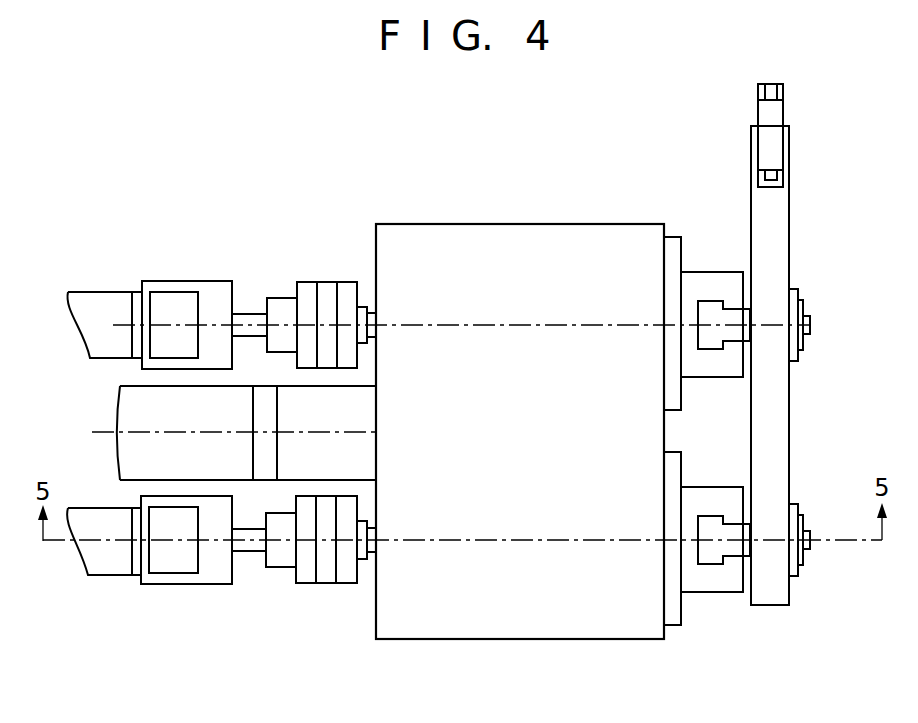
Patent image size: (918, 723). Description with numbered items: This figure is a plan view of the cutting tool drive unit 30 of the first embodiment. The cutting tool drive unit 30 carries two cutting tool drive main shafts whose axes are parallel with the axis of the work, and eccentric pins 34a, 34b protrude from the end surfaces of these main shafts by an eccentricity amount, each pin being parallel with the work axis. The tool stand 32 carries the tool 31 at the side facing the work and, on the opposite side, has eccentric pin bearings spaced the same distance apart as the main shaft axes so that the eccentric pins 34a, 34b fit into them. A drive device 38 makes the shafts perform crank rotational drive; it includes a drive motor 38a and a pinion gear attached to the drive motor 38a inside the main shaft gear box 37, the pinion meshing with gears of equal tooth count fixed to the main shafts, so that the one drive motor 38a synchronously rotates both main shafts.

The cutting tool drive unit 30 is at (499, 220).
The tool 31 is at (772, 113).
The tool stand 32 is at (772, 415).
The eccentric pin 34a is at (807, 318).
The eccentric pin 34b is at (810, 532).
The main shaft gear box 37 is at (501, 620).
The drive device 38 is at (680, 625).
The drive motor 38a is at (130, 457).